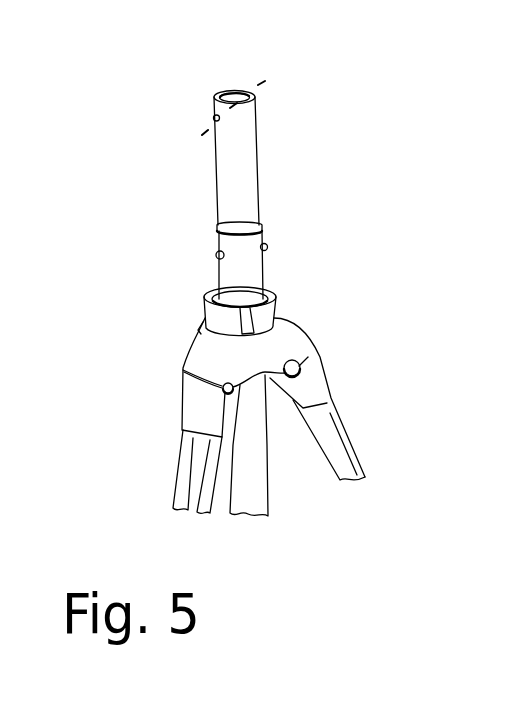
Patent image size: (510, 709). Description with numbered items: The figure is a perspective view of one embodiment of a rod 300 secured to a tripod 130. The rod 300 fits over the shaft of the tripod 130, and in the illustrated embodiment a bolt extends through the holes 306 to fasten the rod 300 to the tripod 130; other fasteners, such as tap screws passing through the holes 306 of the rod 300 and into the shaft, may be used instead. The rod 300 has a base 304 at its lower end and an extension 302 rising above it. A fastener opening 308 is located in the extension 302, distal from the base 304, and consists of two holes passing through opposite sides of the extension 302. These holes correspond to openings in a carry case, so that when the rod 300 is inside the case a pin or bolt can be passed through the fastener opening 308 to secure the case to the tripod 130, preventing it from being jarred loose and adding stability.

The rod 300 is at (185, 40).
The extension 302 is at (257, 143).
The base 304 is at (264, 263).
The holes 306 is at (216, 254).
The fastener opening 308 is at (212, 118).
The tripod 130 is at (155, 318).